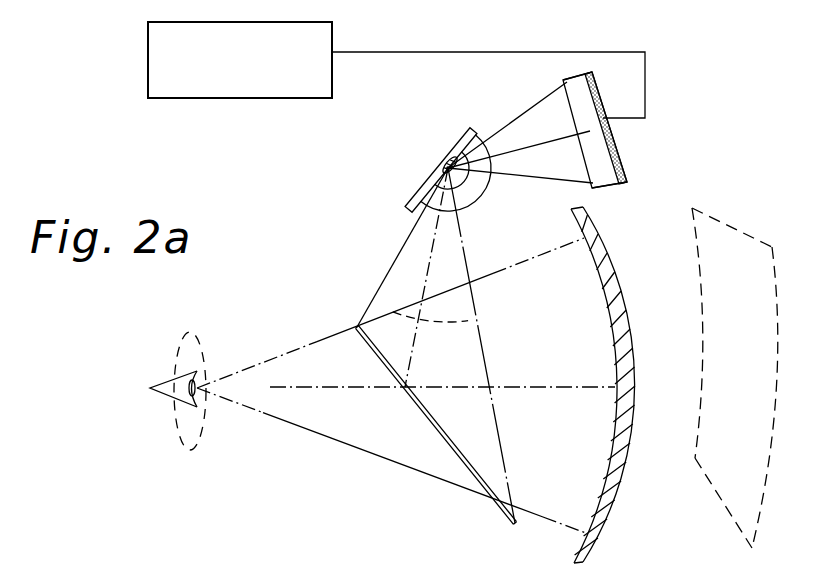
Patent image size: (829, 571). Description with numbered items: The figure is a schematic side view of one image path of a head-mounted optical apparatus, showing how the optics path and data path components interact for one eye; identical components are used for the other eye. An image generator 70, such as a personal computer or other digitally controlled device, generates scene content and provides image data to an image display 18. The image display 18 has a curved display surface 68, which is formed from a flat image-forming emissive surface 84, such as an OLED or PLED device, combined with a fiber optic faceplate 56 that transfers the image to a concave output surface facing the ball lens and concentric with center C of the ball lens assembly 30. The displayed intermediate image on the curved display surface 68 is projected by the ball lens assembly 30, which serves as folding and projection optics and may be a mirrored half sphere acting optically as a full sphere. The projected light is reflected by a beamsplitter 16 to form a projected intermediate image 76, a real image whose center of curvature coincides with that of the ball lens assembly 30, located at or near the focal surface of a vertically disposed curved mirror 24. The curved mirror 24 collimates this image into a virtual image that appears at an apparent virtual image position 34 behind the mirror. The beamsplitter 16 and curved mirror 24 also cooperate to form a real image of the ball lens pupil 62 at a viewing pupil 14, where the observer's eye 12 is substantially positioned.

The eye 12 is at (162, 395).
The viewing pupil 14 is at (190, 448).
The beamsplitter 16 is at (464, 462).
The image display 18 is at (628, 149).
The curved mirror 24 is at (622, 455).
The ball lens assembly 30 is at (488, 192).
The apparent virtual image position 34 is at (728, 223).
The fiber optic faceplate 56 is at (577, 80).
The ball lens pupil 62 is at (450, 160).
The curved display surface 68 is at (563, 108).
The image generator 70 is at (192, 99).
The projected intermediate image 76 is at (383, 305).
The flat image-forming emissive surface 84 is at (622, 183).
The center of ball lens assembly C is at (447, 168).